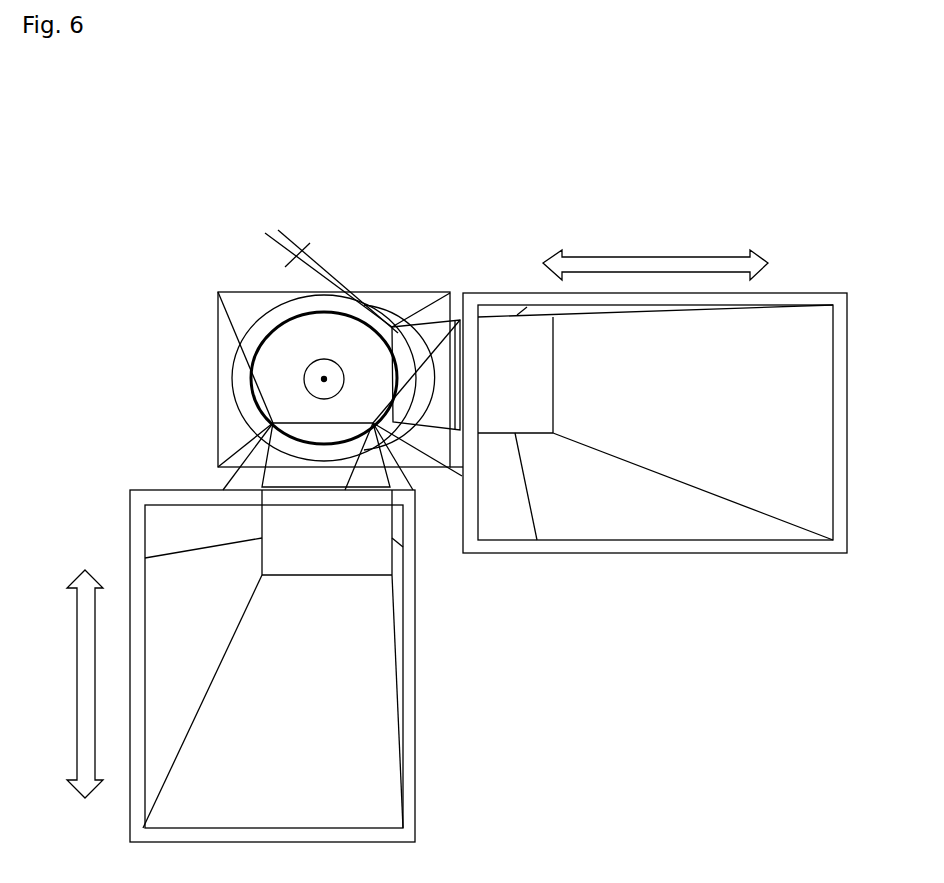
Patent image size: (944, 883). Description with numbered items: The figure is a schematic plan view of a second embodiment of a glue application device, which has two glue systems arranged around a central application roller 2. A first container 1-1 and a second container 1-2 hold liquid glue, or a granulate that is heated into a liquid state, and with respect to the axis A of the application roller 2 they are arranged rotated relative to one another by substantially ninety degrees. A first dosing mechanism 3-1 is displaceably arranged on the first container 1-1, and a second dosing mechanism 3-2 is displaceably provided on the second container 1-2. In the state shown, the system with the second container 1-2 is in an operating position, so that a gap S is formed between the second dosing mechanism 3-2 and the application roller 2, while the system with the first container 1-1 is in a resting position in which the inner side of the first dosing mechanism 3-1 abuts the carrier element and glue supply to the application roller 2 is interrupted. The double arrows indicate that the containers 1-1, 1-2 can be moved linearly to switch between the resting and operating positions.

The first container 1-1 is at (403, 795).
The second container 1-2 is at (775, 295).
The application roller 2 is at (270, 373).
The first dosing mechanism 3-1 is at (278, 479).
The second dosing mechanism 3-2 is at (427, 325).
The axis of the application roller A is at (324, 379).
The gap S is at (320, 273).